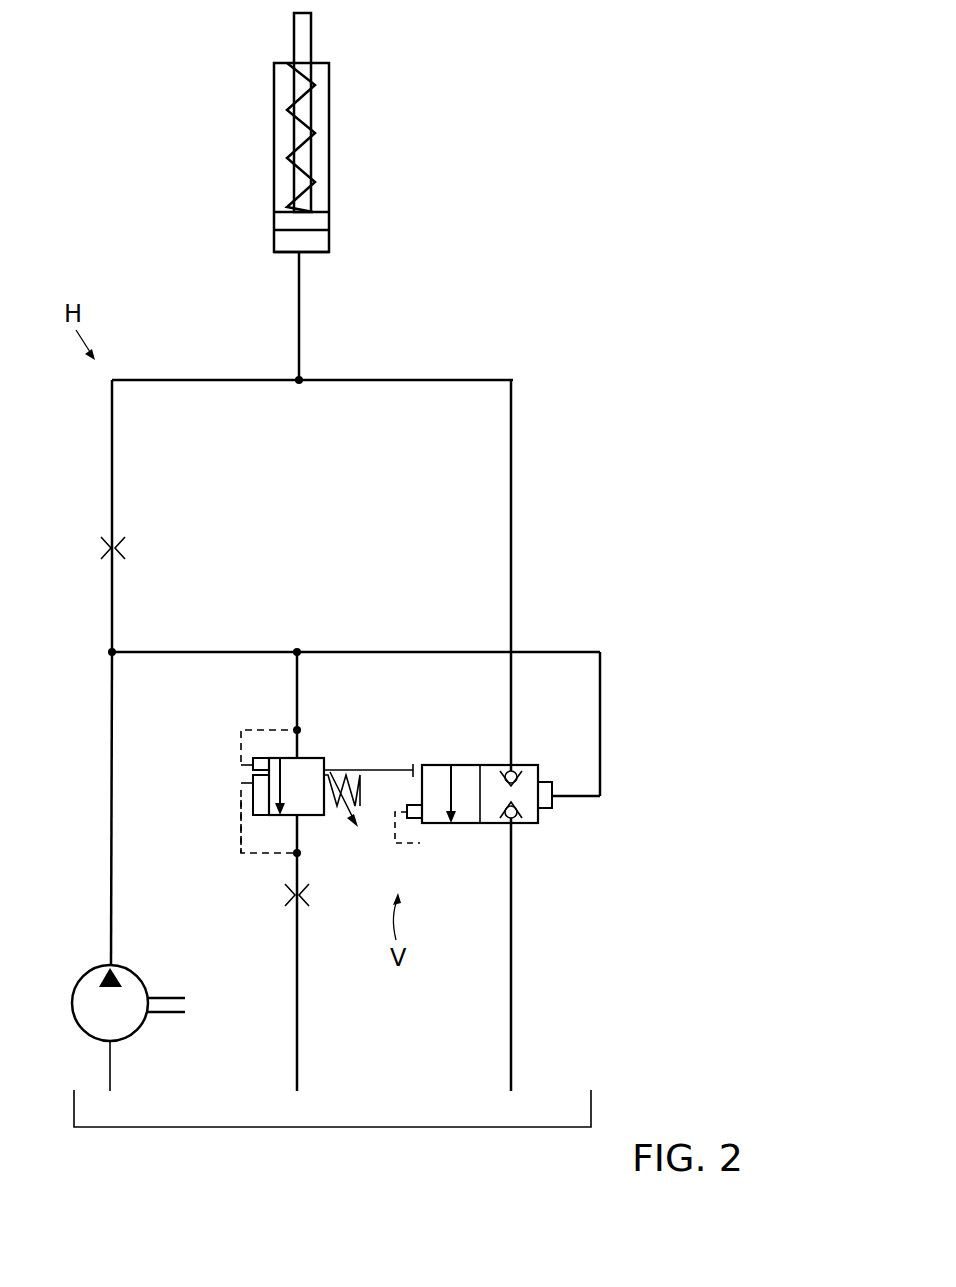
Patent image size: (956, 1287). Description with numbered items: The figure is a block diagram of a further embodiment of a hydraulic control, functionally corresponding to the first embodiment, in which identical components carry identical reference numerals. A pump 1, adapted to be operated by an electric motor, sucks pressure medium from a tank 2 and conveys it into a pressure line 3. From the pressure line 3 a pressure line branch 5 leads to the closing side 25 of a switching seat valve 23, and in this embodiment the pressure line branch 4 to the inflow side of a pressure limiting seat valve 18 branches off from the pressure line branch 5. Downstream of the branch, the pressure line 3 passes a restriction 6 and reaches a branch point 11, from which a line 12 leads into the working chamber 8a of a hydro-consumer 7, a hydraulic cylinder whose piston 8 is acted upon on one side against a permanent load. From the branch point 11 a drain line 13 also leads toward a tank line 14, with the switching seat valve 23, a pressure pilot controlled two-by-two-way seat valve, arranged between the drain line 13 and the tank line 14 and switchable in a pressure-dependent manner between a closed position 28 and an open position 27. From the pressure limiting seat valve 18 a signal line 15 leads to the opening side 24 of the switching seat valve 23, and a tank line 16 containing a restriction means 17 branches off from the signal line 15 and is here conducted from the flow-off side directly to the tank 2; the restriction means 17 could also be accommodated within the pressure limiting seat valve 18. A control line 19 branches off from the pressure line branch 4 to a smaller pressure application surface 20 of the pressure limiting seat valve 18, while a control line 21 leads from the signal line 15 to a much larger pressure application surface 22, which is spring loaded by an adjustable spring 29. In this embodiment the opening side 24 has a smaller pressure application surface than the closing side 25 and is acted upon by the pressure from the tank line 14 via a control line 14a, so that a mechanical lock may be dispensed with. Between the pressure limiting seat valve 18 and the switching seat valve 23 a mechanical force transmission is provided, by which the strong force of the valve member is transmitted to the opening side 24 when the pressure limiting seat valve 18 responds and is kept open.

The pump 1 is at (74, 990).
The tank 2 is at (248, 1125).
The pressure line 3 is at (112, 637).
The pressure line branch 4 is at (296, 689).
The pressure line branch 5 is at (177, 650).
The restriction 6 is at (100, 549).
The hydro-consumer 7 is at (329, 172).
The piston 8 is at (320, 221).
The working chamber 8a is at (320, 242).
The branch point 11 is at (299, 383).
The line 12 is at (300, 311).
The drain line 13 is at (513, 436).
The tank line 14 is at (511, 925).
The control line 14a is at (445, 826).
The signal line 15 is at (299, 868).
The tank line 16 is at (294, 942).
The restriction means 17 is at (309, 895).
The pressure limiting seat valve 18 is at (329, 742).
The control line 19 is at (245, 730).
The smaller pressure application surface 20 is at (251, 768).
The control line 21 is at (241, 836).
The larger pressure application surface 22 is at (249, 783).
The switching seat valve 23 is at (483, 747).
The opening side 24 is at (407, 806).
The closing side 25 is at (554, 800).
The open position 27 is at (468, 825).
The closed position 28 is at (525, 766).
The adjustable spring 29 is at (359, 768).